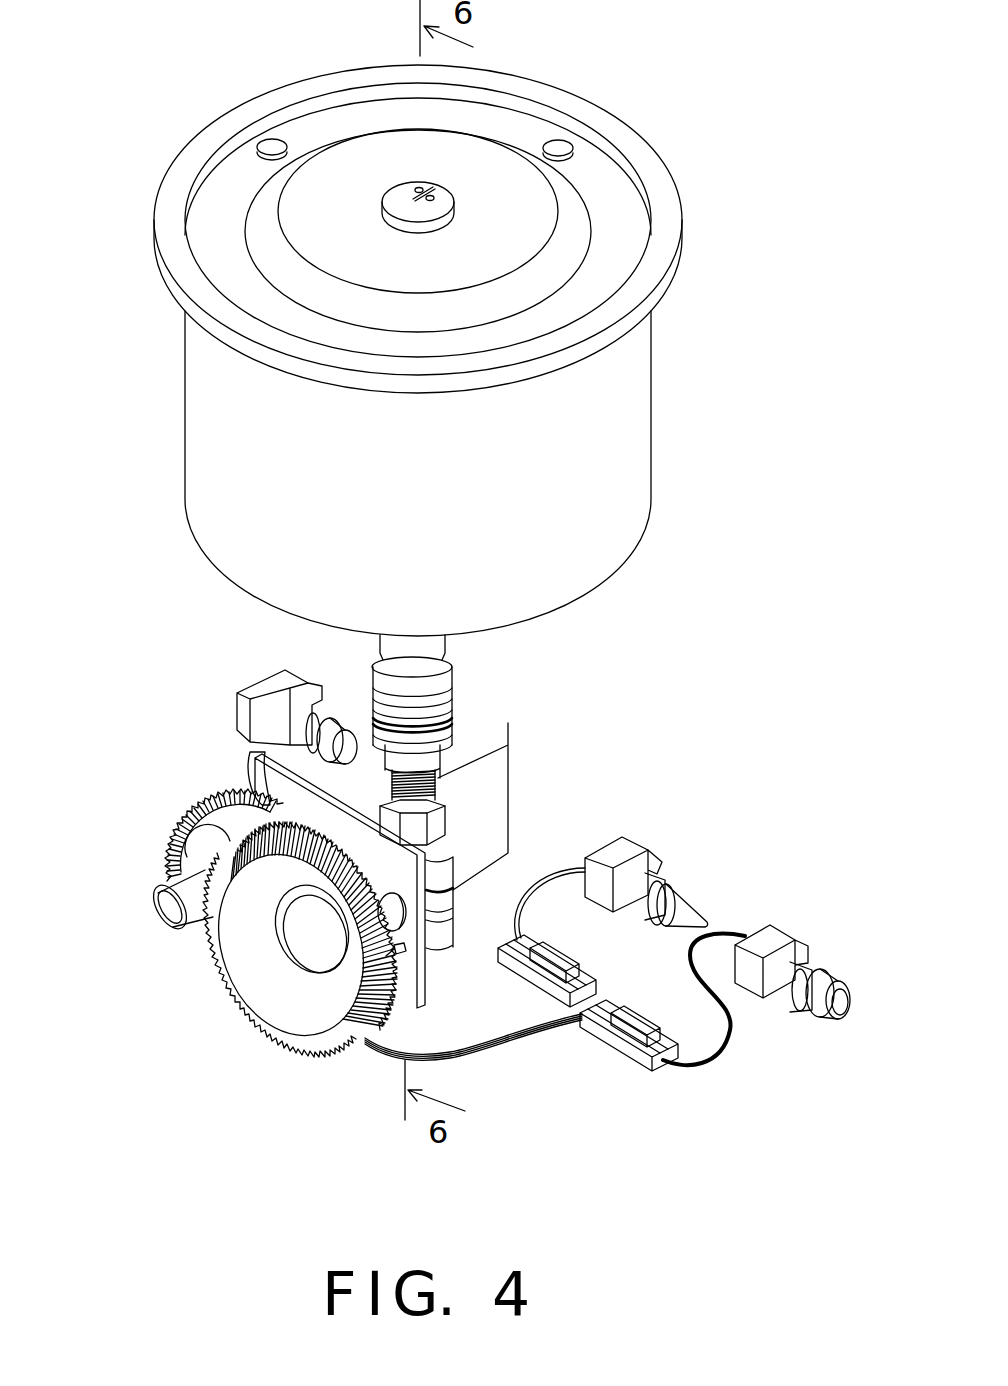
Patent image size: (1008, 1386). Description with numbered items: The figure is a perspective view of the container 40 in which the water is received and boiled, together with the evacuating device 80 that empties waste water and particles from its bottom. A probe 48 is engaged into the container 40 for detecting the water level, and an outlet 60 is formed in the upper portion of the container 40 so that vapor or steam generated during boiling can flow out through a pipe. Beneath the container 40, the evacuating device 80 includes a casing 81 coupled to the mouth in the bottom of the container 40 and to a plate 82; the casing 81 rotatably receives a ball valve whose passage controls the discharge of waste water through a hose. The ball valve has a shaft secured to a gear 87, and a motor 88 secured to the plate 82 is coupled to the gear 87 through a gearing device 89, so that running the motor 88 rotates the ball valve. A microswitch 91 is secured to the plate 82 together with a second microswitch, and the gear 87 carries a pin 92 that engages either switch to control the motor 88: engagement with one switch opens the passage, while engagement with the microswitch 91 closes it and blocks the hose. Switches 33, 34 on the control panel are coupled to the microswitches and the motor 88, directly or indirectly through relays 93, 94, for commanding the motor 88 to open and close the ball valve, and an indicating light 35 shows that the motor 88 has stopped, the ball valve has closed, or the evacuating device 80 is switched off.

The container 40 is at (553, 543).
The probe 48 is at (421, 185).
The outlet 60 is at (272, 146).
The motor 88 is at (463, 722).
The casing 81 is at (437, 883).
The plate 82 is at (283, 803).
The gearing device 89 is at (170, 838).
The gear 87 is at (282, 988).
The pin 92 is at (393, 929).
The microswitch 91 is at (402, 1000).
The switch 33 is at (282, 686).
The indicating light 35 is at (683, 913).
The switch 34 is at (770, 943).
The relay 94 is at (545, 962).
The relay 93 is at (627, 1020).
The evacuating device 80 is at (297, 1081).